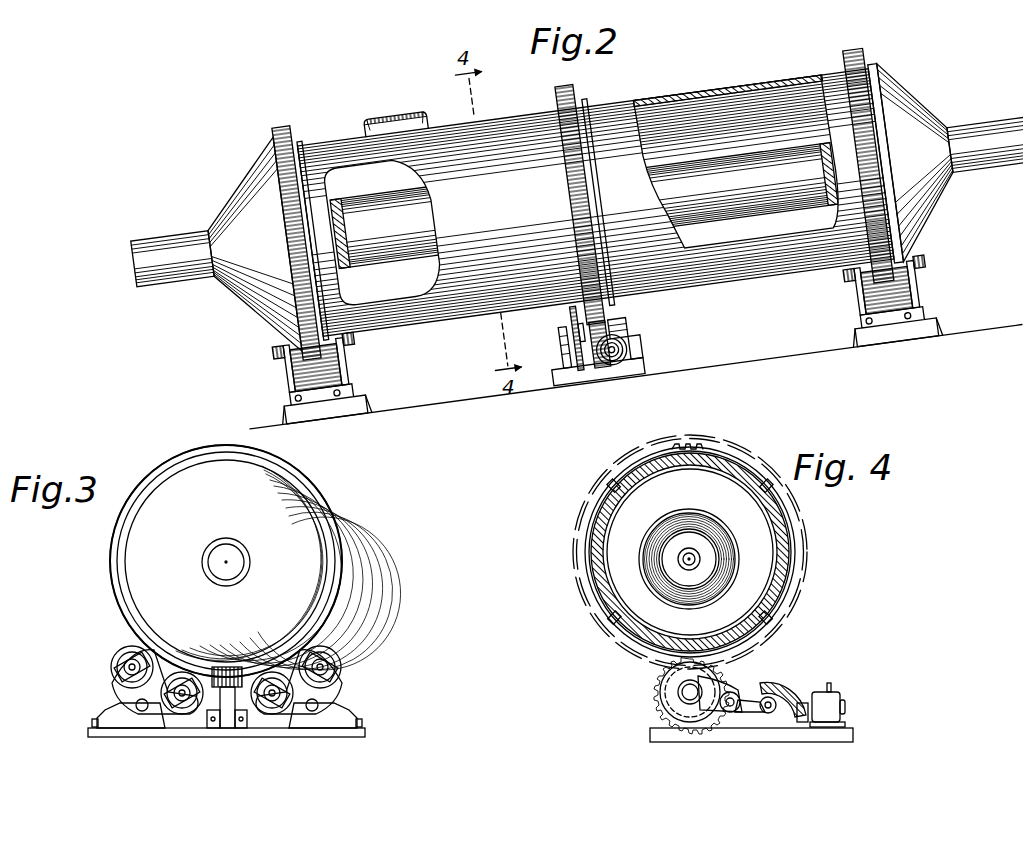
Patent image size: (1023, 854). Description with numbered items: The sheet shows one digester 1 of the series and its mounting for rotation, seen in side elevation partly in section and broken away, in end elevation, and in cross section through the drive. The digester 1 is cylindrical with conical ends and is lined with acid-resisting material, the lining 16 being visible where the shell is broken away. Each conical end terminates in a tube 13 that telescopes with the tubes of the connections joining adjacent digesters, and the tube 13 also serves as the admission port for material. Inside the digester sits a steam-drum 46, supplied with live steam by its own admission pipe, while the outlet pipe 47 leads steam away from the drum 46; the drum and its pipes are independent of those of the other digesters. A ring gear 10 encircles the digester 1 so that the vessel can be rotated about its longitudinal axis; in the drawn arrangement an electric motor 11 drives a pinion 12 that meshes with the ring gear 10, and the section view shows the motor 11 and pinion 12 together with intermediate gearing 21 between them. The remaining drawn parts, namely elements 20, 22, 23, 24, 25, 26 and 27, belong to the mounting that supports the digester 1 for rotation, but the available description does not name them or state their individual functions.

In FIG. 2, the digester 1 is at (599, 195).
In FIG. 3, the digester 1 is at (255, 561).
In FIG. 4, the digester 1 is at (790, 556).
In FIG. 2, the ring gear 10 is at (556, 182).
In FIG. 4, the ring gear 10 is at (684, 446).
In FIG. 2, the electric motor 11 is at (628, 350).
In FIG. 4, the electric motor 11 is at (832, 694).
In FIG. 2, the pinion 12 is at (604, 326).
In FIG. 4, the pinion 12 is at (672, 689).
In FIG. 2, the tube 13 is at (160, 246).
In FIG. 3, the tube 13 is at (226, 538).
In FIG. 2, the lining 16 is at (700, 97).
In FIG. 4, the lining 16 is at (792, 541).
In FIG. 2, the base plate 20 is at (358, 406).
In FIG. 3, the base plate 20 is at (188, 737).
In FIG. 4, the base plate 20 is at (751, 735).
In FIG. 2, the pinion / intermediate gear 21 is at (568, 364).
In FIG. 4, the pinion / intermediate gear 21 is at (751, 702).
In FIG. 2, the pedestal bracket 22 is at (337, 402).
In FIG. 3, the pedestal bracket 22 is at (118, 725).
In FIG. 2, the roller bearing arm 23 is at (346, 378).
In FIG. 3, the roller bearing arm 23 is at (126, 690).
In FIG. 2, the supporting roller 24 is at (300, 376).
In FIG. 3, the supporting roller 24 is at (112, 655).
In FIG. 2, the riding ring (tire) 25 is at (283, 226).
In FIG. 3, the riding ring (tire) 25 is at (110, 585).
In FIG. 2, the thrust roller 26 is at (267, 357).
In FIG. 3, the thrust roller 26 is at (222, 668).
In FIG. 2, the thrust roller support 27 is at (280, 374).
In FIG. 3, the thrust roller support 27 is at (228, 722).
In FIG. 2, the steam-drum 46 is at (584, 202).
In FIG. 4, the steam-drum 46 is at (720, 578).
In FIG. 4, the outlet pipe 47 is at (685, 571).